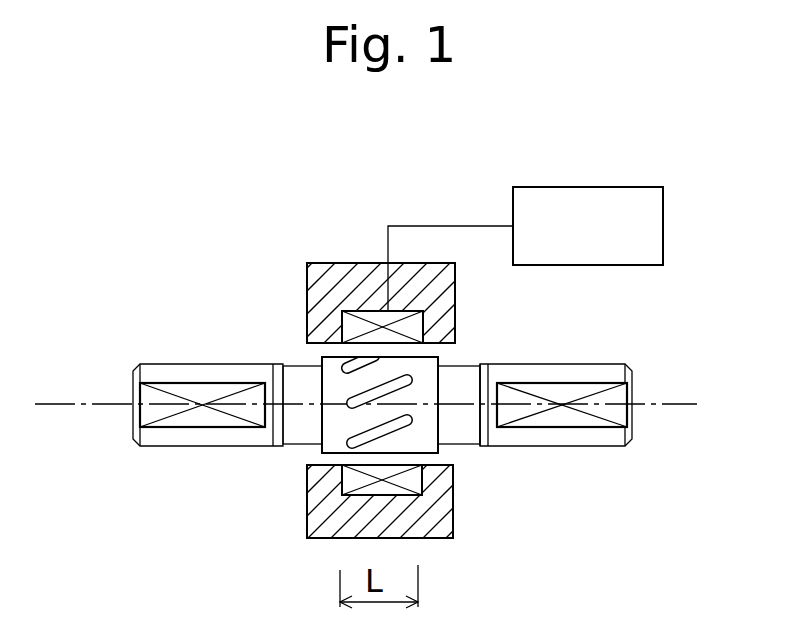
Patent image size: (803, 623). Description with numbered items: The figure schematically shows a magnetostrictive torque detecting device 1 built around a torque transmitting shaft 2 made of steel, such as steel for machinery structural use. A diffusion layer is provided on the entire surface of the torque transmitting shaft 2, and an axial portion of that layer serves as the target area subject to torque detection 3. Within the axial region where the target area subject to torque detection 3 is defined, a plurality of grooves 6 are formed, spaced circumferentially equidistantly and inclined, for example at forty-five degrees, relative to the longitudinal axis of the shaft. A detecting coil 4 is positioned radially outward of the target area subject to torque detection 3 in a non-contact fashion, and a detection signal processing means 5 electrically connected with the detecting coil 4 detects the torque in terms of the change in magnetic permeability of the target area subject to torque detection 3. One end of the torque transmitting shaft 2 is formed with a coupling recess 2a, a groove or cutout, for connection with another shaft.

The torque detecting device 1 is at (250, 315).
The torque transmitting shaft 2 is at (197, 363).
The coupling recess 2a is at (132, 417).
The target area subject to torque detection 3 is at (350, 452).
The detecting coil 4 is at (367, 311).
The detection signal processing means 5 is at (602, 186).
The grooves 6 is at (418, 390).